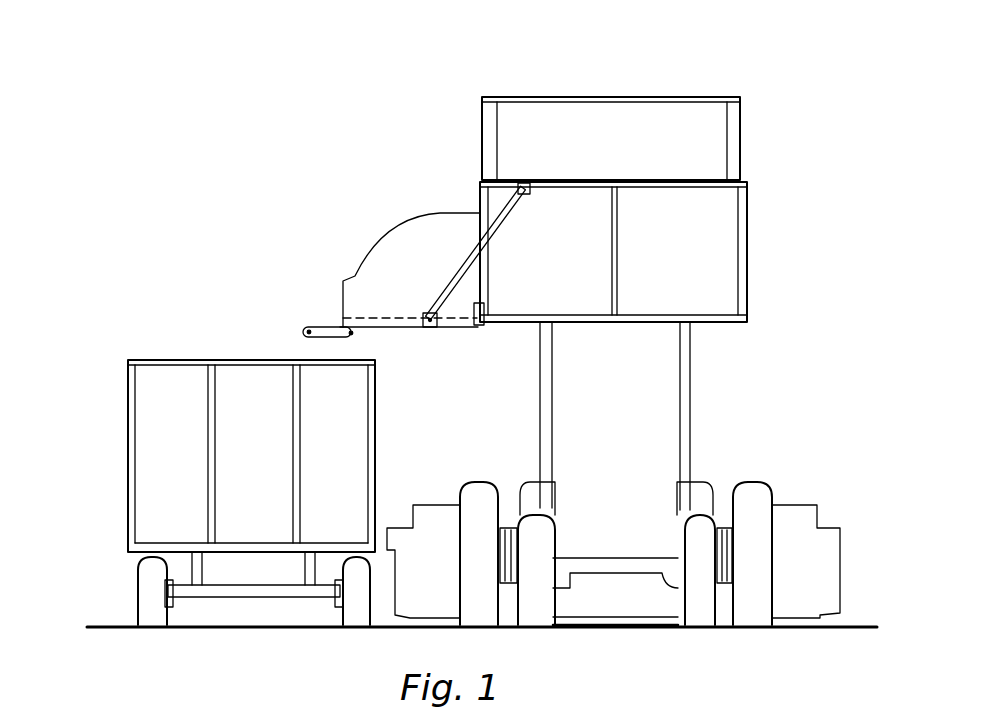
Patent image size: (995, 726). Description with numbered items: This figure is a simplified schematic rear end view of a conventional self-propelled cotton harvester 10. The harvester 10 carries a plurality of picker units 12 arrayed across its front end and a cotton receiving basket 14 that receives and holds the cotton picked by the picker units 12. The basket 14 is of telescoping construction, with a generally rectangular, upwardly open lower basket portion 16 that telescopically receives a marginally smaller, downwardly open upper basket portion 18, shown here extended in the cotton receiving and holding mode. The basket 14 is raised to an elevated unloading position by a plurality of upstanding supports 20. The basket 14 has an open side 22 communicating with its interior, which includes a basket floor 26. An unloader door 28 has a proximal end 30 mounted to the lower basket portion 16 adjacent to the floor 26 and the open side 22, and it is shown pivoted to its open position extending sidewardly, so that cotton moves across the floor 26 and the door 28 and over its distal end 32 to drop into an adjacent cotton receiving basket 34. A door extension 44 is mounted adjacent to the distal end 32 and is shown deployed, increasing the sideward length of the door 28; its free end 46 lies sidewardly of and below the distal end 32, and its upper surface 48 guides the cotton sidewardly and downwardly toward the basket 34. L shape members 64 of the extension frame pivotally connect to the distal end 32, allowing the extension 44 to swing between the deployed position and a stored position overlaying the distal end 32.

The cotton harvester 10 is at (770, 60).
The picker units 12 is at (427, 505).
The cotton receiving basket 14 is at (673, 209).
The lower basket portion 16 is at (747, 217).
The upper basket portion 18 is at (740, 137).
The upstanding supports 20 is at (552, 435).
The open side 22 is at (480, 198).
The basket floor 26 is at (652, 431).
The unloader door 28 is at (429, 336).
The proximal end 30 is at (478, 330).
The distal end 32 is at (352, 334).
The cotton receiving basket 34 is at (120, 528).
The door extension 44 is at (296, 329).
The free end 46 is at (307, 328).
The upper surface 48 is at (337, 325).
The L shape members 64 is at (332, 338).